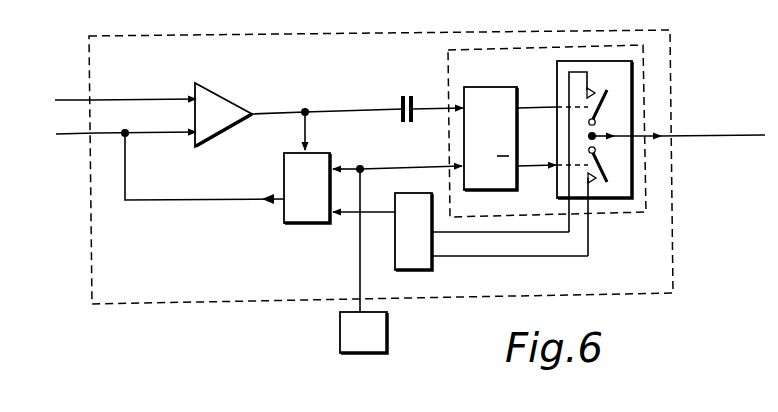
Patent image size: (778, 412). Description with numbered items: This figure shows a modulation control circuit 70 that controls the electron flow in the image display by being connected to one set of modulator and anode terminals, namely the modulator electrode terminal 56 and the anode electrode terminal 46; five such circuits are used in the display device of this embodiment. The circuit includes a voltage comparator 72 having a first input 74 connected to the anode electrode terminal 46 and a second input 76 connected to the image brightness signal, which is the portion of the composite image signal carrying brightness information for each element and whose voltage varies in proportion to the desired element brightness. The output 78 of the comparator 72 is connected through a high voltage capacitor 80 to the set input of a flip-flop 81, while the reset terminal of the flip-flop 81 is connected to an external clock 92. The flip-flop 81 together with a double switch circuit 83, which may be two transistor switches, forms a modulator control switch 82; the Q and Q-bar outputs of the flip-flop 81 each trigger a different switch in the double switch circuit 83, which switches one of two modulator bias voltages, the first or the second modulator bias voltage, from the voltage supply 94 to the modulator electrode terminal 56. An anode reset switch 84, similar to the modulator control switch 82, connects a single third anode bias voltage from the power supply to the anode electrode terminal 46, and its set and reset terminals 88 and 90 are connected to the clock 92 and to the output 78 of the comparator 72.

The anode electrode terminal 46 is at (83, 135).
The modulator electrode terminal 56 is at (689, 135).
The modulation control circuit 70 is at (180, 293).
The voltage comparator 72 is at (211, 92).
The first input 74 is at (173, 133).
The second input 76 is at (109, 100).
The output of comparator 78 is at (260, 113).
The high voltage capacitor 80 is at (406, 95).
The flip-flop 81 is at (492, 90).
The modulator control switch 82 is at (547, 204).
The double switch circuit 83 is at (618, 199).
The anode reset switch 84 is at (284, 165).
The set terminal 88 is at (307, 131).
The reset terminal 90 is at (356, 166).
The external clock 92 is at (340, 331).
The voltage supply 94 is at (416, 271).